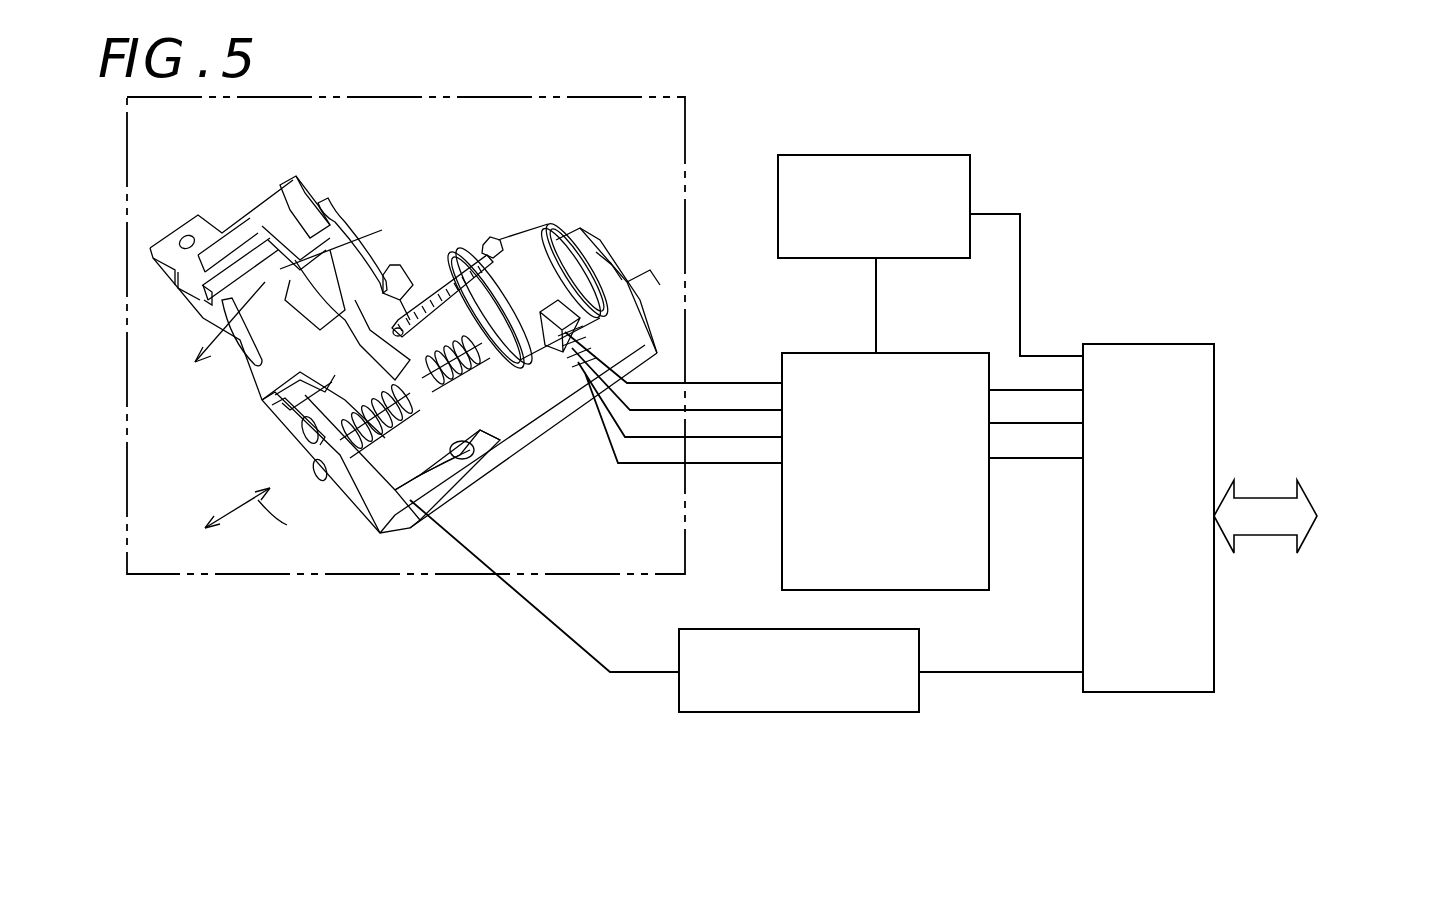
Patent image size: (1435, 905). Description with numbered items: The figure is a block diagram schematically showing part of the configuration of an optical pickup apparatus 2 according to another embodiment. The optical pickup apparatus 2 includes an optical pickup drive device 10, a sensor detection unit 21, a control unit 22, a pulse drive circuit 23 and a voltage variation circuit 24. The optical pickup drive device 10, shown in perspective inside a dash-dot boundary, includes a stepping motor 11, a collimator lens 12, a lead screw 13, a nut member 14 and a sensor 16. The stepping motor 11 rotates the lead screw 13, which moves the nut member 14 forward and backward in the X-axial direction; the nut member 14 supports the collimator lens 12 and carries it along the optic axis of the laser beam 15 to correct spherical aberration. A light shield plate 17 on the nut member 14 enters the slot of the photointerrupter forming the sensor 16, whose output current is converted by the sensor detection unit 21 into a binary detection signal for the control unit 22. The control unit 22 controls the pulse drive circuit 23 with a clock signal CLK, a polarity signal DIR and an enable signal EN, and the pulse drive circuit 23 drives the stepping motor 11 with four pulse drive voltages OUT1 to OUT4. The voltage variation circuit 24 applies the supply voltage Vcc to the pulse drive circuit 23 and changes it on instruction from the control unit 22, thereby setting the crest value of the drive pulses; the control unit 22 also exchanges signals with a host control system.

The optical pickup apparatus 2 is at (1167, 91).
The optical pickup drive device 10 is at (644, 110).
The stepping motor 11 is at (533, 245).
The collimator lens 12 is at (293, 253).
The lead screw 13 is at (470, 400).
The nut member 14 is at (406, 327).
The laser beam 15 is at (362, 237).
The sensor 16 is at (425, 488).
The light shield plate 17 is at (465, 455).
The sensor detection unit 21 is at (910, 650).
The control unit 22 is at (1168, 358).
The pulse drive circuit 23 is at (907, 368).
The voltage variation circuit 24 is at (943, 178).